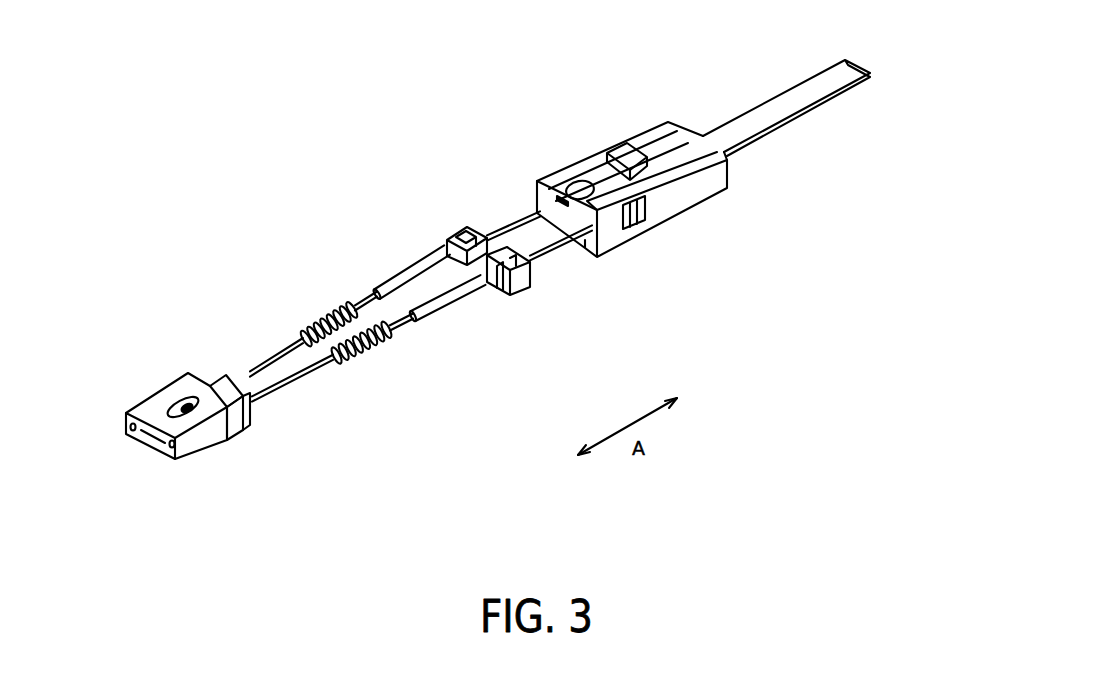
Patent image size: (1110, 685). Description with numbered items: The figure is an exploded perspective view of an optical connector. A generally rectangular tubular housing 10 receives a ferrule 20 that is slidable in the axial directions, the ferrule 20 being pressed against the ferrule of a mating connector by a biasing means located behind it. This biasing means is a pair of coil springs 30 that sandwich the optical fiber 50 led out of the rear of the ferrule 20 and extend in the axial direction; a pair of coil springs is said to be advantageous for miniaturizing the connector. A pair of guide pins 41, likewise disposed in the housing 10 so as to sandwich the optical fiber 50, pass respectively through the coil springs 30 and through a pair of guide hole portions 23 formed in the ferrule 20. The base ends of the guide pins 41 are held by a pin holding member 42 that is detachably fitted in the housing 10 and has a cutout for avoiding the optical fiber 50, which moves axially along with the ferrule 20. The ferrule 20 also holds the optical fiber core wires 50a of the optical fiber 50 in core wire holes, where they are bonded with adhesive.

The housing 10 is at (627, 143).
The ferrule 20 is at (173, 388).
The guide hole portions 23 is at (126, 413).
The coil springs 30 is at (322, 314).
The guide pins 41 is at (411, 270).
The pin holding member 42 is at (470, 229).
The optical fiber 50 is at (532, 243).
The optical fiber core wires 50a is at (152, 441).